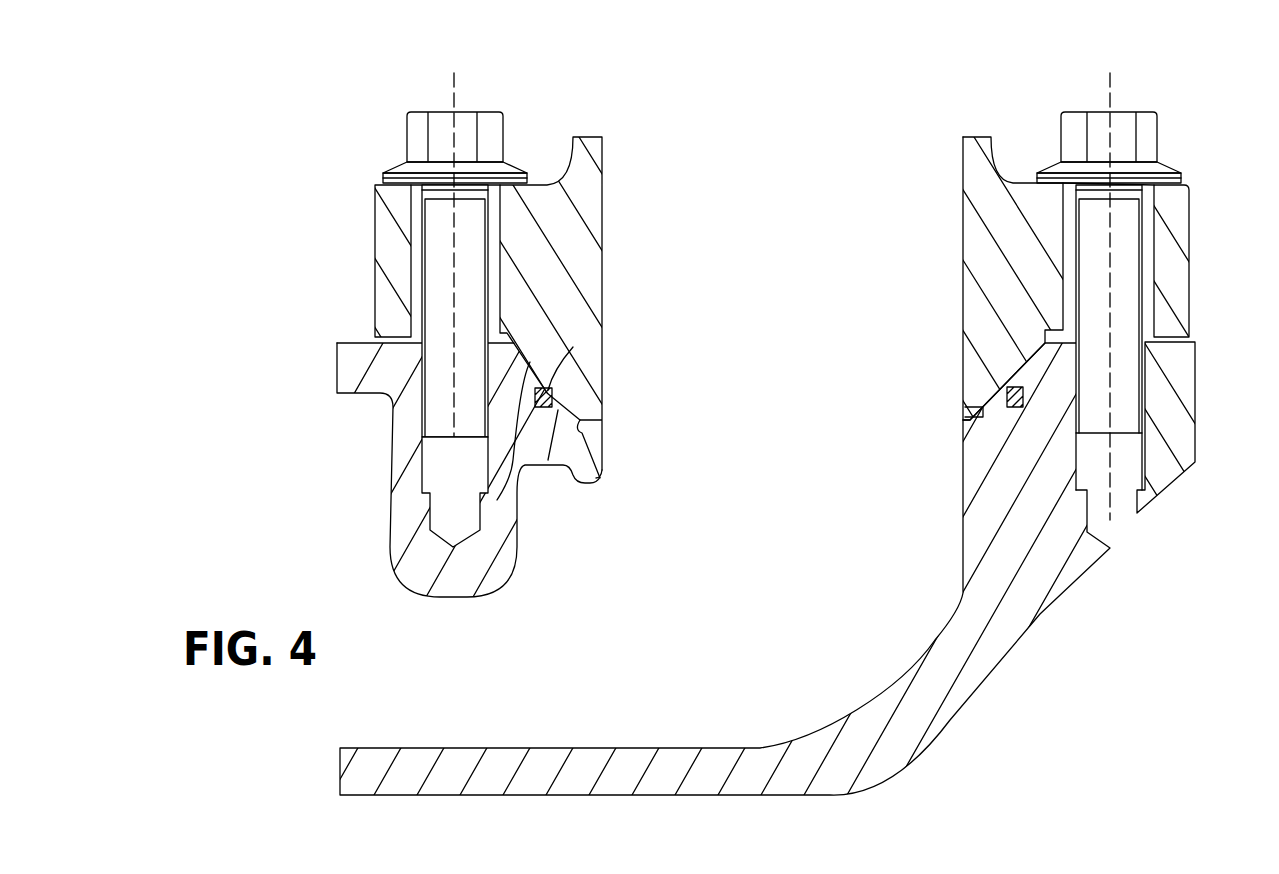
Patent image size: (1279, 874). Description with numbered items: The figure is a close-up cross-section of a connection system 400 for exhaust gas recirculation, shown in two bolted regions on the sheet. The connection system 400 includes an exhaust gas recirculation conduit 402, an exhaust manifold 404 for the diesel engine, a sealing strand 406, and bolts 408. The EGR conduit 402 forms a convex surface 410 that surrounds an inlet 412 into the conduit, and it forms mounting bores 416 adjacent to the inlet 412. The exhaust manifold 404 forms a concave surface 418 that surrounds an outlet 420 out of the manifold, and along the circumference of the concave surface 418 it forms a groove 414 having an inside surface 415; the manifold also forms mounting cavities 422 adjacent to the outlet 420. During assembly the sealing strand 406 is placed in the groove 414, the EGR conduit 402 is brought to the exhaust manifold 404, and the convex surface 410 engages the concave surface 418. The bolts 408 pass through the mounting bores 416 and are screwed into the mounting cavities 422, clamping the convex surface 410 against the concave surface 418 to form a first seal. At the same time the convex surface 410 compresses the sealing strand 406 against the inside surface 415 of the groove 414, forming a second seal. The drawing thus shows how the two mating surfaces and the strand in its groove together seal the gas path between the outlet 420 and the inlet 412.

The connection system 400 is at (762, 34).
The exhaust gas recirculation (EGR) conduit 402 is at (594, 183).
The exhaust manifold 404 is at (967, 687).
The sealing strand 406 is at (573, 347).
The bolts 408 is at (463, 127).
The convex surface 410 is at (590, 430).
The inlet 412 is at (860, 172).
The groove 414 is at (543, 410).
The inside surface 415 is at (563, 467).
The mounting bores 416 is at (412, 285).
The concave surface 418 is at (513, 505).
The outlet 420 is at (677, 616).
The mounting cavities 422 is at (440, 514).